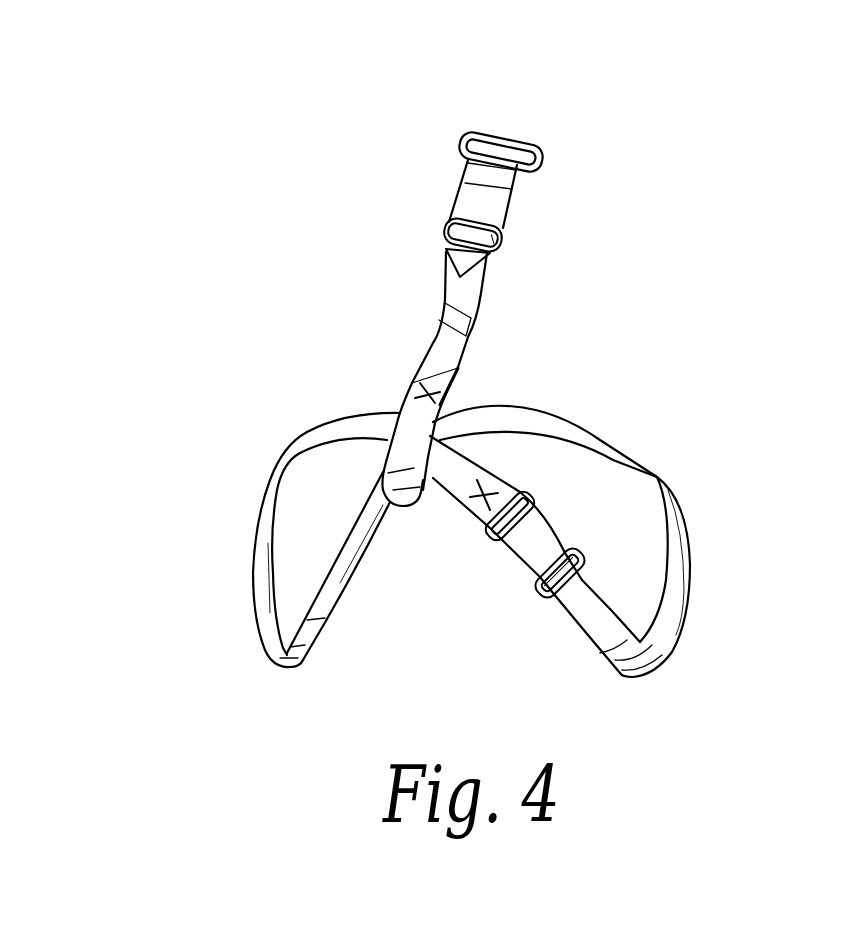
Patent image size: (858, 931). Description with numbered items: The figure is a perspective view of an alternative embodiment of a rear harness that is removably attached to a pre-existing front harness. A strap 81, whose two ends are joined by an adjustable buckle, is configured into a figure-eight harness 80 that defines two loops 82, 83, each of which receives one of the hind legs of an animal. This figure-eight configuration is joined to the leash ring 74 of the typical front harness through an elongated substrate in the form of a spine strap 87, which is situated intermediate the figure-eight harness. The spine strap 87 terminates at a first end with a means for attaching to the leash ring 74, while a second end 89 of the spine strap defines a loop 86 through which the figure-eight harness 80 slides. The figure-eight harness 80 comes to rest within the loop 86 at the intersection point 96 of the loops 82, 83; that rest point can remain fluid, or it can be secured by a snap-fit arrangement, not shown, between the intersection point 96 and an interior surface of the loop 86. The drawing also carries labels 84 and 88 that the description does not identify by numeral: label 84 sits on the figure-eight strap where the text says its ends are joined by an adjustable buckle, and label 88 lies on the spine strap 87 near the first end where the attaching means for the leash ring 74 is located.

The leash ring 74 is at (520, 142).
The figure eight harness 80 is at (290, 666).
The strap 81 is at (612, 437).
The loop 82 is at (627, 520).
The loop 83 is at (305, 527).
The adjustment buckle 84 is at (546, 588).
The loop 86 is at (410, 495).
The spine strap 87 is at (444, 301).
The upper buckle 88 is at (502, 243).
The second end 89 is at (448, 383).
The intersection point 96 is at (410, 427).